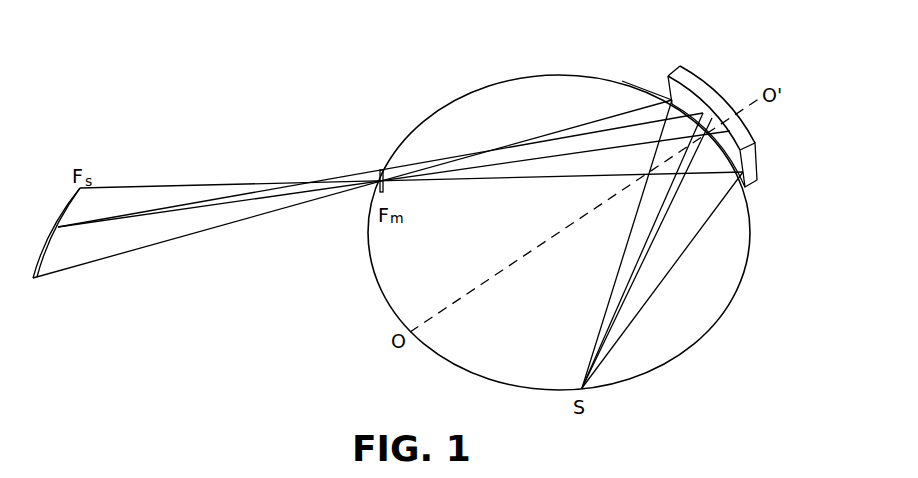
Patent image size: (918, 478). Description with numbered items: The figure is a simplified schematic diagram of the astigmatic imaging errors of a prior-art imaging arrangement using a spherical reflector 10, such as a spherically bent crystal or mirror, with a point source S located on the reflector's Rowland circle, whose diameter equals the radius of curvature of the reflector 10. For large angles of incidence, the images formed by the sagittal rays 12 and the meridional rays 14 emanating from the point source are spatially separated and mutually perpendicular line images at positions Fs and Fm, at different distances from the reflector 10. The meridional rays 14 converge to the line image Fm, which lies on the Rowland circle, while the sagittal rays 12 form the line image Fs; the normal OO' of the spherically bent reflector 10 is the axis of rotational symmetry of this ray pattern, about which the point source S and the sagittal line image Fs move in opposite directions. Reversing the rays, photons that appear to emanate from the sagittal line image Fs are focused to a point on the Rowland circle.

The spherical reflector 10 is at (694, 86).
The sagittal rays 12 is at (625, 118).
The meridional rays 14 is at (545, 150).